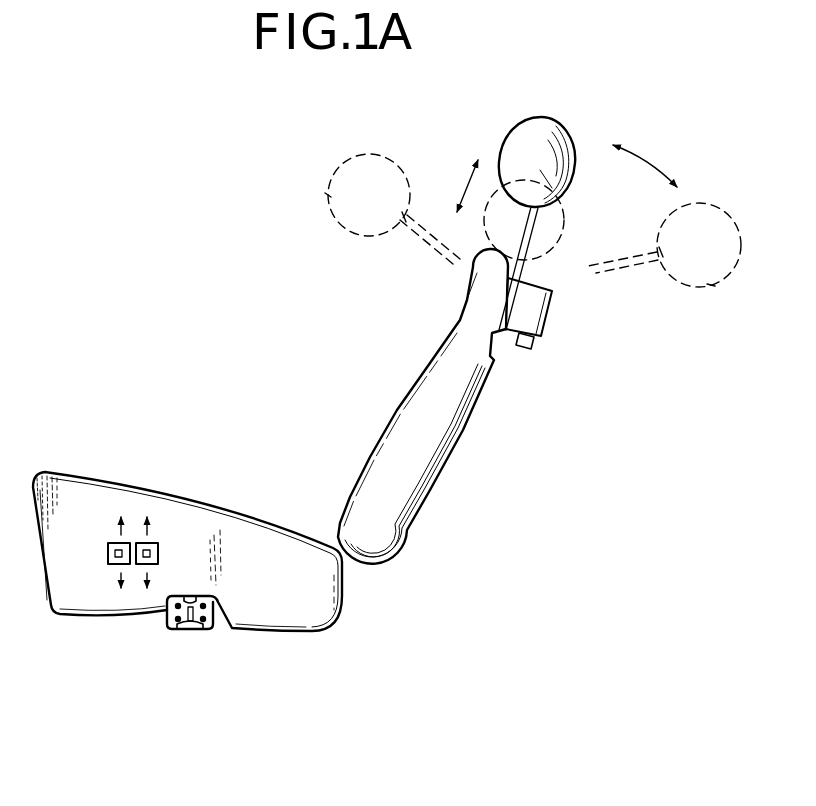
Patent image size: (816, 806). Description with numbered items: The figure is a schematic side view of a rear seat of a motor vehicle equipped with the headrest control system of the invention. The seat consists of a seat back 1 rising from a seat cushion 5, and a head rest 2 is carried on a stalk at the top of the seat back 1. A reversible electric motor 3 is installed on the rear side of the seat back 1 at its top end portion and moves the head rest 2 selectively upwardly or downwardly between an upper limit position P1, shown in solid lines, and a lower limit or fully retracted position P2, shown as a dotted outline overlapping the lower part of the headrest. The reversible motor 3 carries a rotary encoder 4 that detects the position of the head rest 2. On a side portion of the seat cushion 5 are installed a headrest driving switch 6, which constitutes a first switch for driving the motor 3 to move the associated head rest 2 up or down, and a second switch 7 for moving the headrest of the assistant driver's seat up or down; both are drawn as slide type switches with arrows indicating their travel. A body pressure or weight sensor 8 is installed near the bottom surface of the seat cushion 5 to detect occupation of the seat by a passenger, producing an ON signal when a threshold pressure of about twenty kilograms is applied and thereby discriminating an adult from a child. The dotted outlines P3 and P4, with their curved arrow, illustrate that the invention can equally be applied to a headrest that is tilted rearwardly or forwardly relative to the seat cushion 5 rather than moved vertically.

The seat back 1 is at (447, 427).
The head rest 2 is at (527, 118).
The reversible electric motor 3 is at (543, 310).
The rotary encoder 4 is at (529, 348).
The seat cushion 5 is at (210, 507).
The headrest driving switch 6 is at (110, 561).
The switch 7 is at (140, 565).
The body pressure sensor 8 is at (207, 630).
The upper limit position P1 is at (557, 122).
The lower limit or fully retracted position P2 is at (572, 188).
The dotted outline of tilted headrest position P3 is at (713, 275).
The dotted outline of tilted headrest position P4 is at (329, 197).